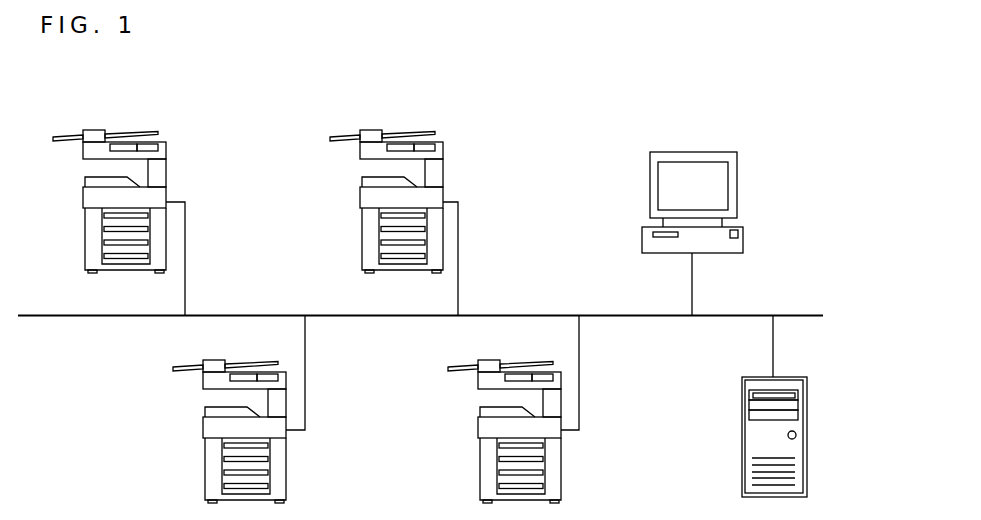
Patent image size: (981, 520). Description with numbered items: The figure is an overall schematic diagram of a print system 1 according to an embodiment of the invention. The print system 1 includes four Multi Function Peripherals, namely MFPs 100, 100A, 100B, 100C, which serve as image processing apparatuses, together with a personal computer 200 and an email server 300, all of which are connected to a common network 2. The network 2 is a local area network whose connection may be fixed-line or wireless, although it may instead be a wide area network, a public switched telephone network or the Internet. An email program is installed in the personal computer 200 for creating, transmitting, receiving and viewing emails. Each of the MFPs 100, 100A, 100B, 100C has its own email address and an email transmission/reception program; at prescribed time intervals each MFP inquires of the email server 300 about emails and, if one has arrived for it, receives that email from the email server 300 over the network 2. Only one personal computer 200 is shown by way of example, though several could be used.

The print system 1 is at (315, 68).
The network 2 is at (538, 315).
The Multi Function Peripheral 100 is at (140, 132).
The Multi Function Peripheral 100A is at (286, 473).
The Multi Function Peripheral 100B is at (415, 132).
The Multi Function Peripheral 100C is at (561, 473).
The personal computer 200 is at (700, 152).
The email server 300 is at (757, 377).